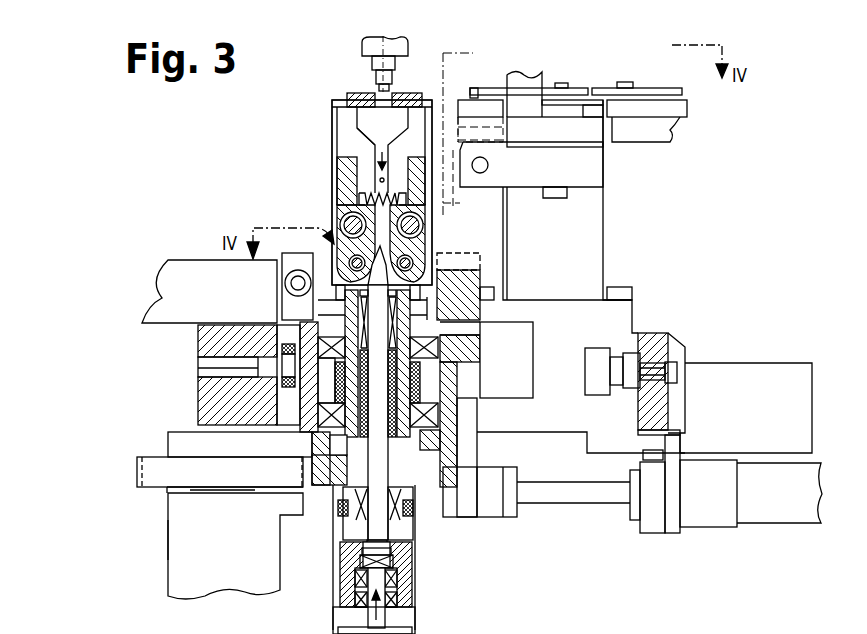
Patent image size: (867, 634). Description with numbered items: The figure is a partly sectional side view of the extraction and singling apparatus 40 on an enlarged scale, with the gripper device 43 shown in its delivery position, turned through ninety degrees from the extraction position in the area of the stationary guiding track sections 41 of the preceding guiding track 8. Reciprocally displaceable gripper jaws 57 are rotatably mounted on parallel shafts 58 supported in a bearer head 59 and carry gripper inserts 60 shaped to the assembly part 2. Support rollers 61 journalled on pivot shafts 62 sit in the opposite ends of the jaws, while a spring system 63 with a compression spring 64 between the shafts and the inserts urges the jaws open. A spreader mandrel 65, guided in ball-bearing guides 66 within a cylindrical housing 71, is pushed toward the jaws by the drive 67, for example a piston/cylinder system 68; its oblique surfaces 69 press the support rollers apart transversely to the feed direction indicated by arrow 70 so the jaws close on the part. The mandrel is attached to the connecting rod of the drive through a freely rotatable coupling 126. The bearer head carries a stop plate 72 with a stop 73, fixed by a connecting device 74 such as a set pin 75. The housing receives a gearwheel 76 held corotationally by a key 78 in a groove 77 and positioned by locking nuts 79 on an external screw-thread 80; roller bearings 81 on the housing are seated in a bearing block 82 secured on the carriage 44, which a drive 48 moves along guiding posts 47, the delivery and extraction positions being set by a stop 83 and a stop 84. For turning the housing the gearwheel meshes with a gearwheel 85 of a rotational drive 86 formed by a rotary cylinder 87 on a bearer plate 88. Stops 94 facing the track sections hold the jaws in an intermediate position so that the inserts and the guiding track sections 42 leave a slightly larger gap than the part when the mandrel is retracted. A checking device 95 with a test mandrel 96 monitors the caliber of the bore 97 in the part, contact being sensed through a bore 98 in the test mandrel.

The assembly part 2 is at (350, 100).
The guiding track 8 is at (644, 88).
The extraction and singling apparatus 40 is at (535, 66).
The stationary guiding track sections 41 is at (573, 103).
The guiding track sections 42 is at (443, 70).
The gripper device 43 is at (256, 160).
The carriage 44 is at (588, 362).
The guiding posts 47 is at (760, 440).
The drive 48 is at (778, 508).
The gripper jaws 57 is at (338, 165).
The parallel shafts 58 is at (378, 256).
The bearer head 59 is at (345, 225).
The gripper inserts 60 is at (345, 128).
The support rollers 61 is at (355, 255).
The pivot shafts 62 is at (337, 250).
The spring system 63 is at (358, 133).
The compression spring 64 is at (440, 255).
The spreader mandrel 65 is at (402, 530).
The ball-bearing guides 66 is at (400, 300).
The drive 67 is at (424, 630).
The piston/cylinder system 68 is at (346, 632).
The oblique surfaces 69 is at (425, 268).
The arrow 70 is at (372, 622).
The cylindrical housing 71 is at (235, 332).
The stop plate 72 is at (277, 305).
The stop 73 is at (632, 300).
The connecting device 74 is at (283, 300).
The set pin 75 is at (325, 307).
The gearwheel 76 is at (495, 490).
The groove 77 is at (347, 505).
The key 78 is at (343, 455).
The locking nuts 79 is at (413, 505).
The external screw-thread 80 is at (390, 542).
The roller bearings 81 is at (282, 350).
The bearing block 82 is at (465, 350).
The stop 83 is at (205, 393).
The stop 84 is at (700, 393).
The gearwheel 85 is at (178, 476).
The rotational drive 86 is at (162, 556).
The rotary cylinder 87 is at (200, 580).
The bearer plate 88 is at (182, 444).
The stops 94 is at (488, 165).
The checking device 95 is at (362, 62).
The test mandrel 96 is at (376, 80).
The bore 97 is at (404, 100).
The bore 98 is at (368, 60).
The freely rotatable coupling 126 is at (428, 590).